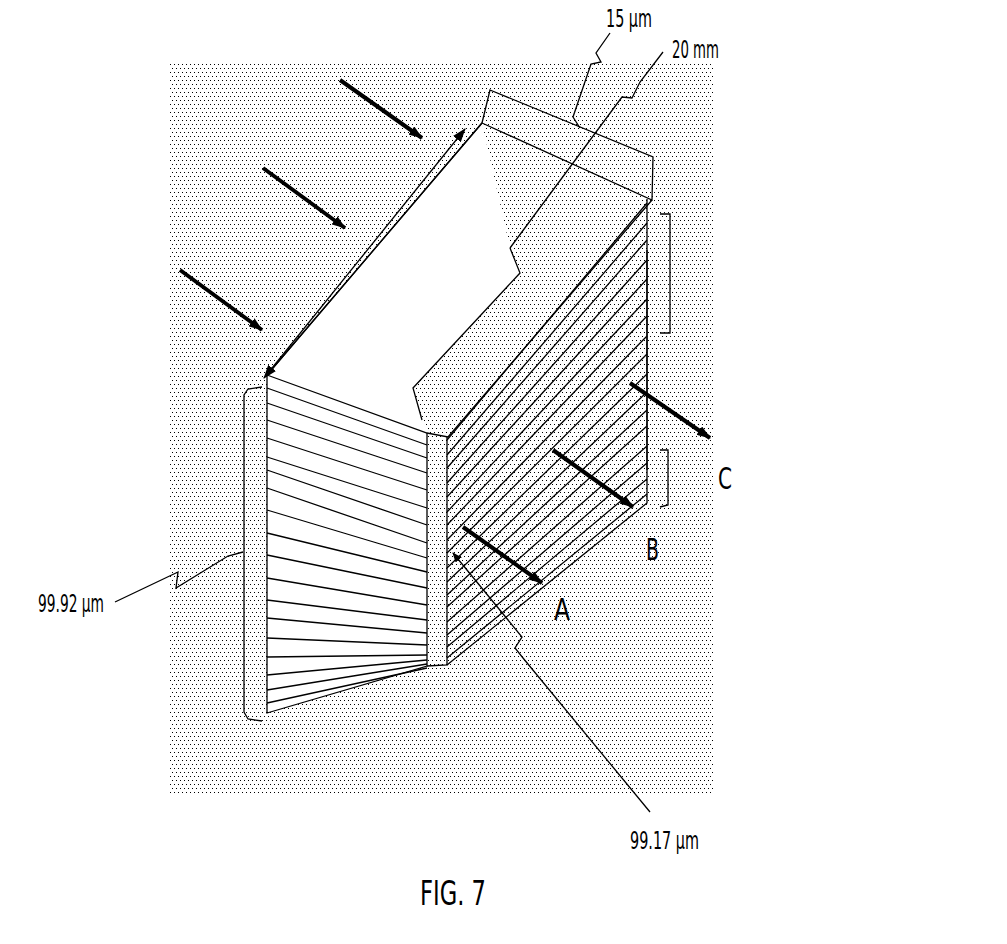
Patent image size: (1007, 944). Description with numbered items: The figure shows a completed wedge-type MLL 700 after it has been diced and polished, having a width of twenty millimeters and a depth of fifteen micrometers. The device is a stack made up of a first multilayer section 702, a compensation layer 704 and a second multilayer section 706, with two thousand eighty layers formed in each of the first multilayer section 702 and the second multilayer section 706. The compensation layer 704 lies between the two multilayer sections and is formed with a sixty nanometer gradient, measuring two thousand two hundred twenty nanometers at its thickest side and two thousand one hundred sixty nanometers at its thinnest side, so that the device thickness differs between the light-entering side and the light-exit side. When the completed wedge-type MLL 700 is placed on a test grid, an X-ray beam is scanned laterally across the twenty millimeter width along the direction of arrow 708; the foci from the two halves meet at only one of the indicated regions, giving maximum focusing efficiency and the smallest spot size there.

The completed wedge-type MLL 700 is at (454, 47).
The first multilayer section 702 is at (675, 453).
The compensation layer 704 is at (647, 376).
The second multilayer section 706 is at (670, 272).
The arrow 708 is at (370, 250).